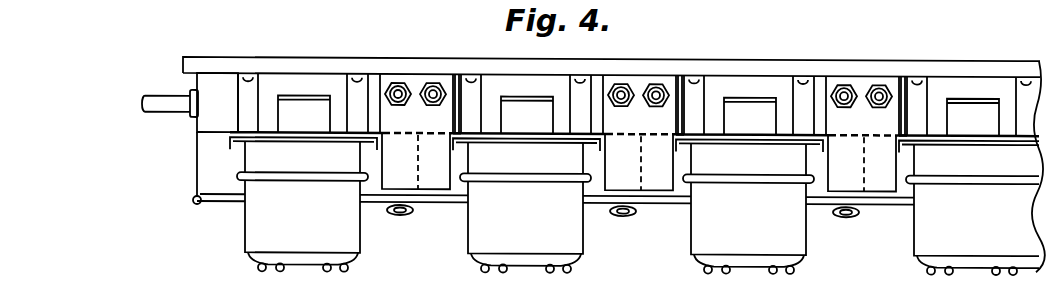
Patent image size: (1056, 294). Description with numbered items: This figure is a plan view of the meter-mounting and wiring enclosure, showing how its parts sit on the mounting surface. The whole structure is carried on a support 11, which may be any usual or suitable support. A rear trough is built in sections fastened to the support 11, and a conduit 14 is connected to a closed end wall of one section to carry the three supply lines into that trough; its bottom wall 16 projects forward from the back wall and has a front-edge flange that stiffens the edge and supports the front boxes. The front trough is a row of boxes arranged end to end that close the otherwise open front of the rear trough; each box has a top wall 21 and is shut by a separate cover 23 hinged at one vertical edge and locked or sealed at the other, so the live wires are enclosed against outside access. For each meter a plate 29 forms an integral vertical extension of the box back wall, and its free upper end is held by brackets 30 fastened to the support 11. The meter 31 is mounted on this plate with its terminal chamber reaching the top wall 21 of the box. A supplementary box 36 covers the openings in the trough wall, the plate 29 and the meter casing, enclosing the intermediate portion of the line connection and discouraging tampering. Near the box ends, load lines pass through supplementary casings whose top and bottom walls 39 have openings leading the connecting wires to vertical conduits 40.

The support 11 is at (424, 63).
The conduit 14 is at (142, 106).
The bottom wall 16 is at (218, 112).
The top wall 21 is at (210, 172).
The cover 23 is at (212, 204).
The plate 29 is at (292, 139).
The brackets 30 is at (352, 97).
The meter 31 is at (388, 207).
The supplementary box 36 is at (304, 113).
The top and bottom walls 39 is at (416, 161).
The vertical conduits 40 is at (393, 103).